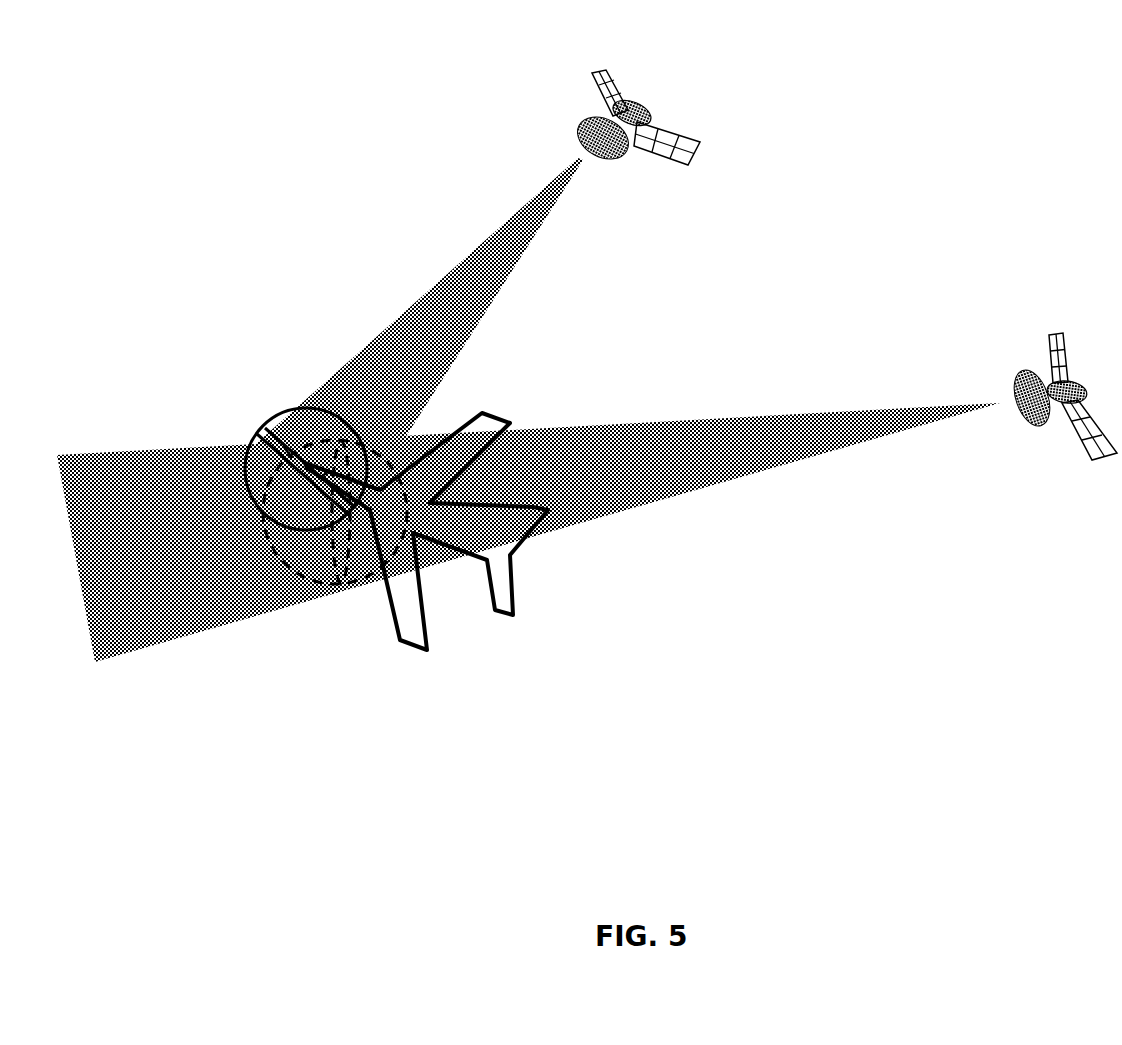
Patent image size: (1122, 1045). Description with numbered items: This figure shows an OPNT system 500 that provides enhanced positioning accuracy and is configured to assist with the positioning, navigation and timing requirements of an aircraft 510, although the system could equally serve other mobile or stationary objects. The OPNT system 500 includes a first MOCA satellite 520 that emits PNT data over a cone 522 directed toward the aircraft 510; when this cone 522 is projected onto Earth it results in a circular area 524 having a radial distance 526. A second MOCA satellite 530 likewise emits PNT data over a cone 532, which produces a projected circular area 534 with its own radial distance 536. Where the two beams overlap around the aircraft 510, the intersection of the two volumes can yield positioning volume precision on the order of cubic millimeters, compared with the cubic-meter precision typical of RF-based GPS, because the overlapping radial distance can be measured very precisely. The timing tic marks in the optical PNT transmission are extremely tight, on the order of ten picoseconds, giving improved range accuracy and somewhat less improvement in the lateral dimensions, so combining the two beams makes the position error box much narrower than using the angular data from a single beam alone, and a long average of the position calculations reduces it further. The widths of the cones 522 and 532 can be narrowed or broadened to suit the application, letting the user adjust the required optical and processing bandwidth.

The OPNT system 500 is at (230, 166).
The aircraft 510 is at (487, 410).
The first MOCA satellite 520 is at (648, 95).
The cone 522 is at (462, 272).
The circular area 524 is at (316, 399).
The radial distance 526 is at (258, 435).
The second MOCA satellite 530 is at (1067, 338).
The cone 532 is at (790, 430).
The projected circular area 534 is at (285, 568).
The radial distance 536 is at (327, 572).